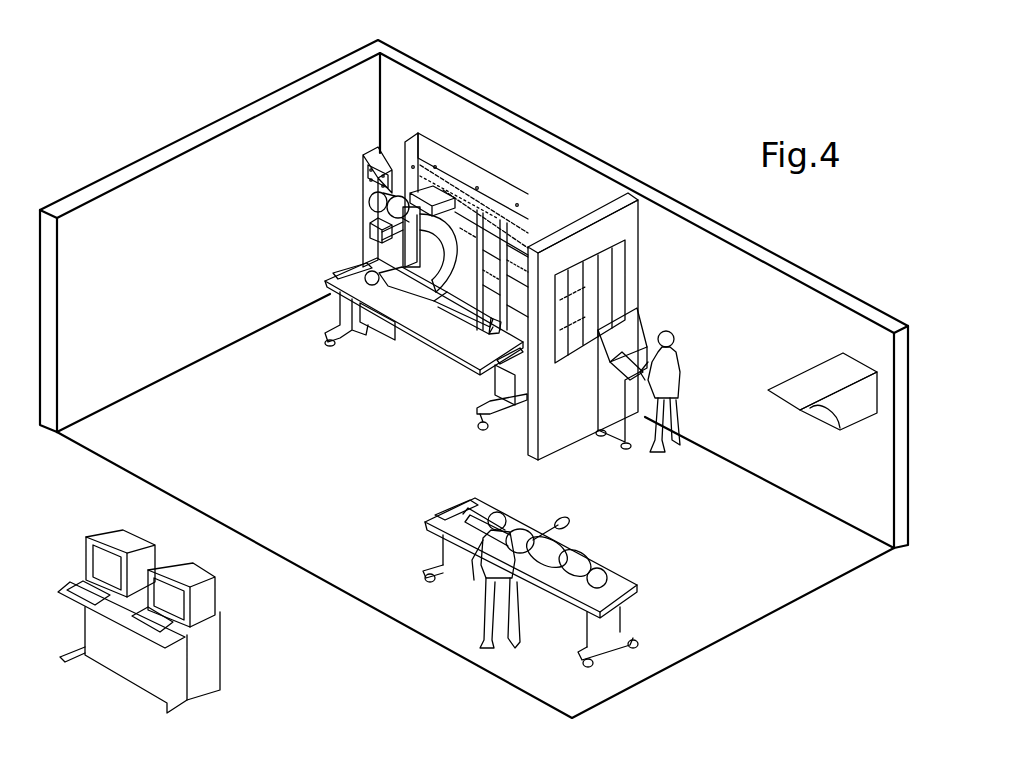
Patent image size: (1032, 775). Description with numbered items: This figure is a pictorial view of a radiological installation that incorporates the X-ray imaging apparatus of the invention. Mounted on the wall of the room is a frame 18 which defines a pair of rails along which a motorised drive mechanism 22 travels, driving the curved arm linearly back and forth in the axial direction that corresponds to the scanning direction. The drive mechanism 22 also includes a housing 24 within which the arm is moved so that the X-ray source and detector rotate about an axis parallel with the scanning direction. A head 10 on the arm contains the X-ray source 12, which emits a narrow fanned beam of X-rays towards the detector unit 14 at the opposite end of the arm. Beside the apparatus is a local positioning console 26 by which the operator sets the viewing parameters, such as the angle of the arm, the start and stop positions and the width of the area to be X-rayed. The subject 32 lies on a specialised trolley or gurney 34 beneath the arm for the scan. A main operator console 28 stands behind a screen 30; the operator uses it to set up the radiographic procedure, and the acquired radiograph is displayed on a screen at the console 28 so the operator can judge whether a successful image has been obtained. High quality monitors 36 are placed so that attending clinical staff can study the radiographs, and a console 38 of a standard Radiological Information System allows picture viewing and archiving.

The head 10 is at (370, 230).
The X-ray source 12 is at (377, 193).
The detector unit 14 is at (365, 327).
The frame 18 is at (483, 177).
The motorised drive mechanism 22 is at (453, 196).
The housing 24 is at (463, 223).
The local positioning console 26 is at (375, 155).
The main operator console 28 is at (637, 332).
The screen 30 is at (628, 222).
The subject 32 is at (406, 337).
The trolley or gurney 34 is at (460, 368).
The monitors 36 is at (861, 410).
The console 38 is at (213, 595).